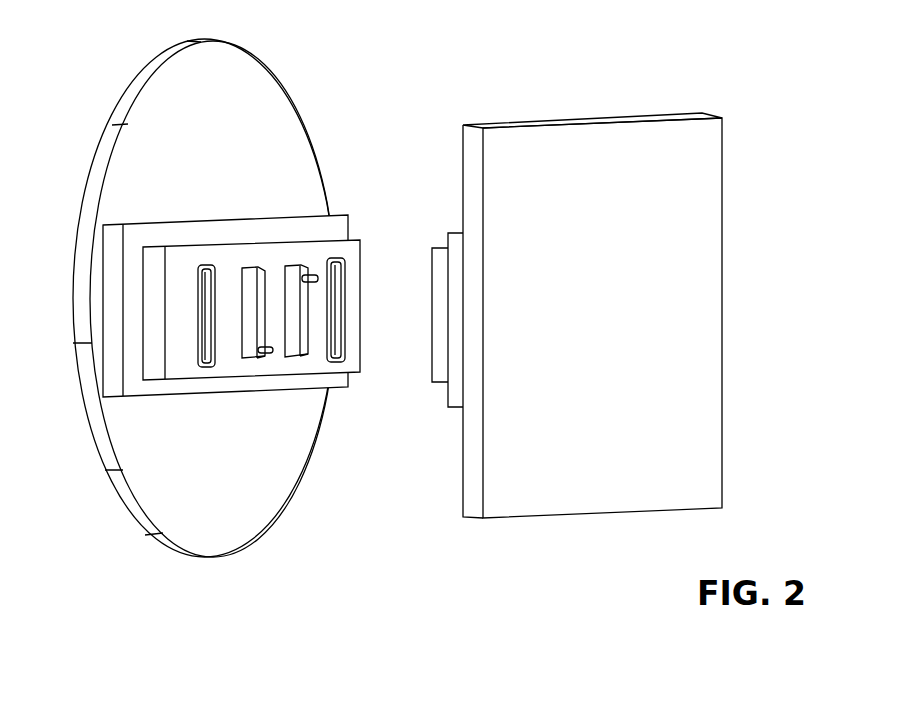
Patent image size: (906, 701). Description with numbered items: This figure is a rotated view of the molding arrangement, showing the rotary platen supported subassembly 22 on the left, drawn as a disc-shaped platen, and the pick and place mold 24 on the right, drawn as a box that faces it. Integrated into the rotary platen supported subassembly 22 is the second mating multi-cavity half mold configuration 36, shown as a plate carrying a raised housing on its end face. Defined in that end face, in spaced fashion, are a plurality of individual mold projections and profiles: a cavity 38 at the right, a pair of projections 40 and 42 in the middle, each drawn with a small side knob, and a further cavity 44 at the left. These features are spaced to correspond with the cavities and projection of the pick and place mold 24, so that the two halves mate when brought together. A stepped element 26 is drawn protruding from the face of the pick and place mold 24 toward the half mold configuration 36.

The rotary platen supported subassembly 22 is at (126, 79).
The pick and place mold 24 is at (741, 133).
The connector 26 is at (458, 395).
The second mating multi-cavity half mold configuration 36 is at (333, 225).
The cavity 38 is at (333, 295).
The projection 40 is at (300, 265).
The projection 42 is at (242, 358).
The further cavity 44 is at (203, 265).